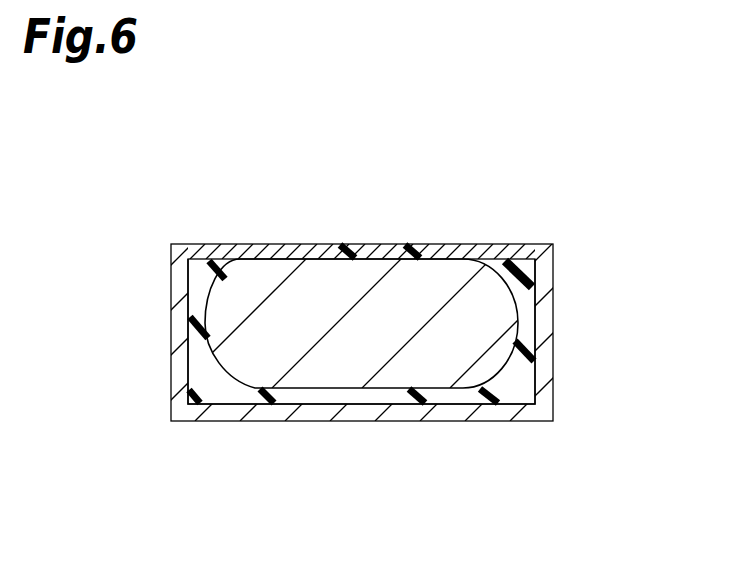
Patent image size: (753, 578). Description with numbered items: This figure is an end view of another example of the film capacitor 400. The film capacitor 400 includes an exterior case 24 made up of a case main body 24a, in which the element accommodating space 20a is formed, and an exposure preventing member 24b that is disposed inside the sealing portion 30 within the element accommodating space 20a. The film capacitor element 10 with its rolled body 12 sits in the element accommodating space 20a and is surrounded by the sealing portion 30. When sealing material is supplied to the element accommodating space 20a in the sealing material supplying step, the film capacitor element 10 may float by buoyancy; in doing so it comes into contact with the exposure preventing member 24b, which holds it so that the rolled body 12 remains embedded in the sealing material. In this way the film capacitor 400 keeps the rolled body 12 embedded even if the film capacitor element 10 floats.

The film capacitor 400 is at (373, 311).
The exterior case 24 is at (373, 271).
The case main body 24a is at (546, 345).
The exposure preventing member 24b is at (262, 246).
The element accommodating space 20a is at (217, 247).
The film capacitor element 10 is at (378, 282).
The rolled body 12 is at (333, 283).
The sealing portion 30 is at (400, 250).